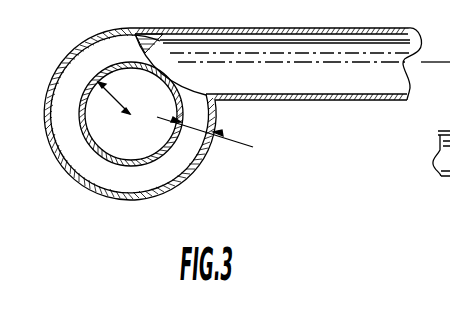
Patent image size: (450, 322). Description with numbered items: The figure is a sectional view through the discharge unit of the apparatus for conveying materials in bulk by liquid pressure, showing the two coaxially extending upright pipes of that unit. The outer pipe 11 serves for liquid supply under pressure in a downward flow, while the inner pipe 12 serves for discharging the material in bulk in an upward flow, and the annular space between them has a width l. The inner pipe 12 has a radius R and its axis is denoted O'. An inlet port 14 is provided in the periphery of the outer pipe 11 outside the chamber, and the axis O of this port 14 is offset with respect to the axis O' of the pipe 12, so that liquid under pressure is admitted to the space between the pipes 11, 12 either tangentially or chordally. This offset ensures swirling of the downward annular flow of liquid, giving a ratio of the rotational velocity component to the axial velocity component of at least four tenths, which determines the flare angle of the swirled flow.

The pipe for liquid supply under pressure in a downward flow 11 is at (73, 53).
The pipe for discharging the material in bulk in an upward flow 12 is at (90, 140).
The inlet port 14 is at (153, 42).
The axis of the port O is at (290, 64).
The axis of the pipe O' is at (138, 135).
The radius of the pipe R is at (115, 95).
The amount of space between the pipes l is at (205, 122).